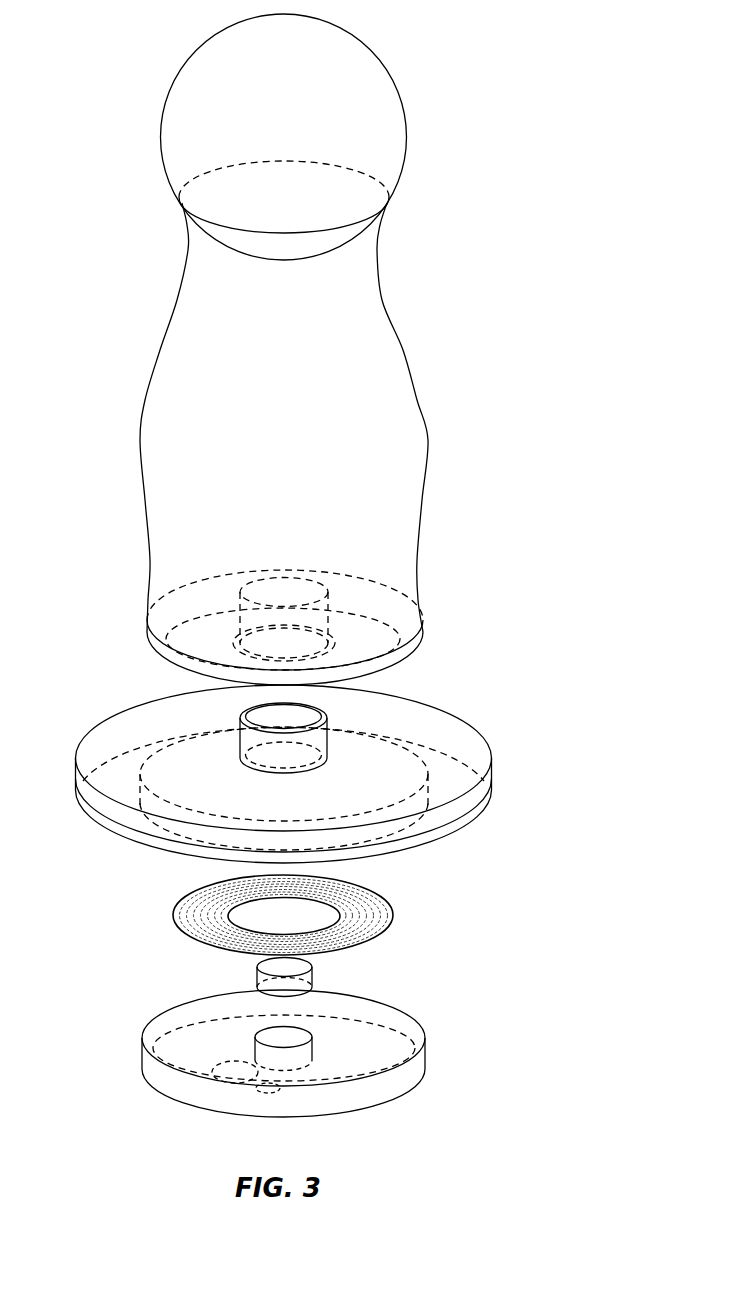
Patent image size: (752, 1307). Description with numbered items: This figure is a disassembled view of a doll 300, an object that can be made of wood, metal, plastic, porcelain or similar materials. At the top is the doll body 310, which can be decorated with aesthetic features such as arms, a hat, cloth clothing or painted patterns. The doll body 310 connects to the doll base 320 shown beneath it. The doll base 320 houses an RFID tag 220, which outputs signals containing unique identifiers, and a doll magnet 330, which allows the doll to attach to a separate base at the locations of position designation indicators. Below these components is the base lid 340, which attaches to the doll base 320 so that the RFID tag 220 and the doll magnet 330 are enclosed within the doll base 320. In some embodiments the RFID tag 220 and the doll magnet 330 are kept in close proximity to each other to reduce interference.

The doll 300 is at (532, 120).
The doll body 310 is at (400, 473).
The doll base 320 is at (127, 750).
The RFID tag 220 is at (395, 927).
The doll magnet 330 is at (257, 983).
The base lid 340 is at (203, 1092).